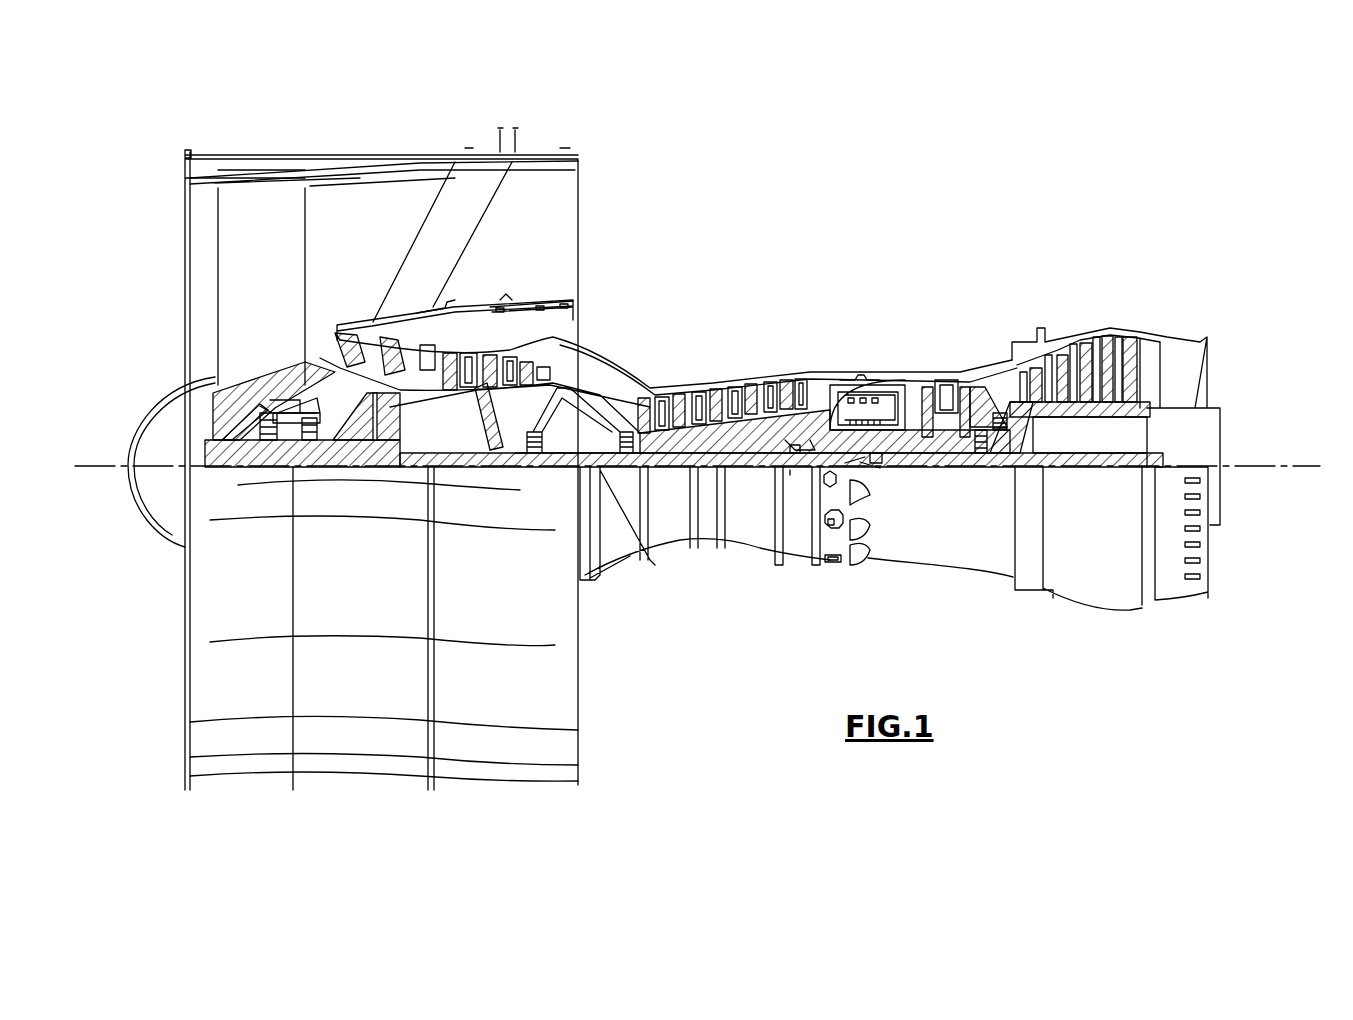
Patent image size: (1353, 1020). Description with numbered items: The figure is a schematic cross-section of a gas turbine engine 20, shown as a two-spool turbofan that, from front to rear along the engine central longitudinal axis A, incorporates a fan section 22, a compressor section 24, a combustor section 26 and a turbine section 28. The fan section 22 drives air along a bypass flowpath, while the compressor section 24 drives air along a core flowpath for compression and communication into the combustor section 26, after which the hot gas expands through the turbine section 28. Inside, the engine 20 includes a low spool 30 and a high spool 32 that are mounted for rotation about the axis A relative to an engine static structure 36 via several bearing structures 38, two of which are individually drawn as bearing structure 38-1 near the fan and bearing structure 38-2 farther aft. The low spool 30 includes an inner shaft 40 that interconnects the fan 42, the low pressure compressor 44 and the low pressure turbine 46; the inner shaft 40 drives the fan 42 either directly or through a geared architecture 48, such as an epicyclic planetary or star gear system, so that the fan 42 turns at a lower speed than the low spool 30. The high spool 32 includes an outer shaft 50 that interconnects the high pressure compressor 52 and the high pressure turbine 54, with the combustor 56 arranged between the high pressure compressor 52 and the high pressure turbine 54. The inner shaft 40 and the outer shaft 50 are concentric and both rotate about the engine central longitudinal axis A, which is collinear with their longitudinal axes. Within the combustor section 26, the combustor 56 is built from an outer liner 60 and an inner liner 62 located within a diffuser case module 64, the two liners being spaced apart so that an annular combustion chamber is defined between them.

The gas turbine engine 20 is at (897, 206).
The fan section 22 is at (430, 108).
The compressor section 24 is at (437, 270).
The combustor section 26 is at (928, 270).
The turbine section 28 is at (1150, 270).
The low spool 30 is at (748, 480).
The high spool 32 is at (796, 440).
The engine static structure 36 is at (793, 572).
The bearing structures 38 is at (995, 445).
The bearing structure 38-1 is at (271, 445).
The bearing structure 38-2 is at (534, 448).
The inner shaft 40 is at (602, 478).
The fan 42 is at (261, 279).
The low pressure compressor 44 is at (560, 358).
The low pressure turbine 46 is at (1086, 362).
The geared architecture 48 is at (399, 448).
The outer shaft 50 is at (878, 460).
The high pressure compressor 52 is at (720, 393).
The high pressure turbine 54 is at (946, 375).
The combustor 56 is at (870, 395).
The outer liner 60 is at (480, 232).
The inner liner 62 is at (430, 160).
The diffuser case module 64 is at (500, 300).
The engine central longitudinal axis A is at (1304, 464).